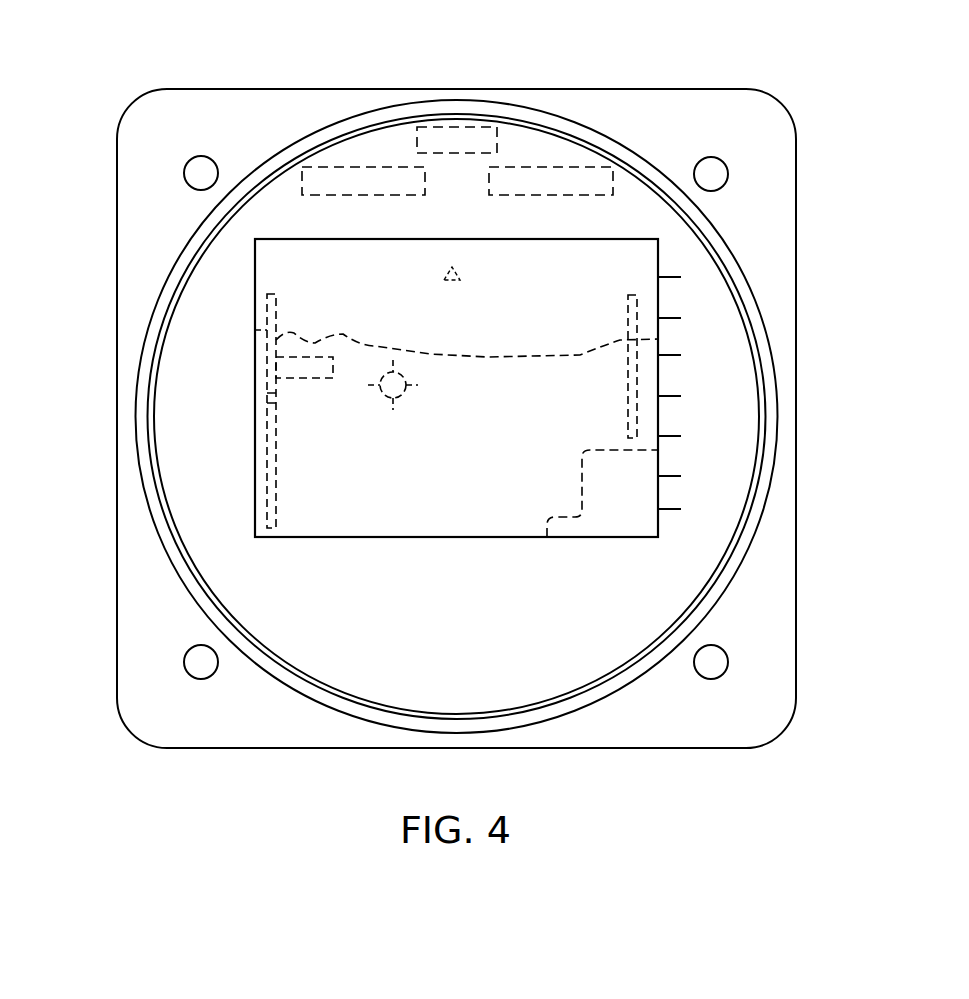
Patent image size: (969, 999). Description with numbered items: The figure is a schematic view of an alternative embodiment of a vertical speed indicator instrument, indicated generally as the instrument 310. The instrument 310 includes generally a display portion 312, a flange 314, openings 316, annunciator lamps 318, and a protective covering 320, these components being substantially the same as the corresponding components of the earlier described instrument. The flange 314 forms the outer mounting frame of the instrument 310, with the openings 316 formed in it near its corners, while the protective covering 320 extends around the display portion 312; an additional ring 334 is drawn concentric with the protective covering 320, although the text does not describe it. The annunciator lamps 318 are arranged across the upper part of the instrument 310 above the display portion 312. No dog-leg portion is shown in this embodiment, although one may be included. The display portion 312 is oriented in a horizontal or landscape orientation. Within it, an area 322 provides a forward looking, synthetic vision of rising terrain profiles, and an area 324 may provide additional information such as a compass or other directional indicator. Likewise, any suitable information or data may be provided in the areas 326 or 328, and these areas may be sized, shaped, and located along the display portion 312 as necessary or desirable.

The instrument 310 is at (718, 70).
The display portion 312 is at (540, 311).
The flange 314 is at (794, 607).
The openings 316 is at (711, 679).
The annunciator lamps 318 is at (360, 172).
The protective covering 320 is at (730, 518).
The area 322 is at (562, 413).
The area 324 is at (625, 497).
The area 326 is at (636, 307).
The area 328 is at (266, 455).
The inner ring 334 is at (705, 226).